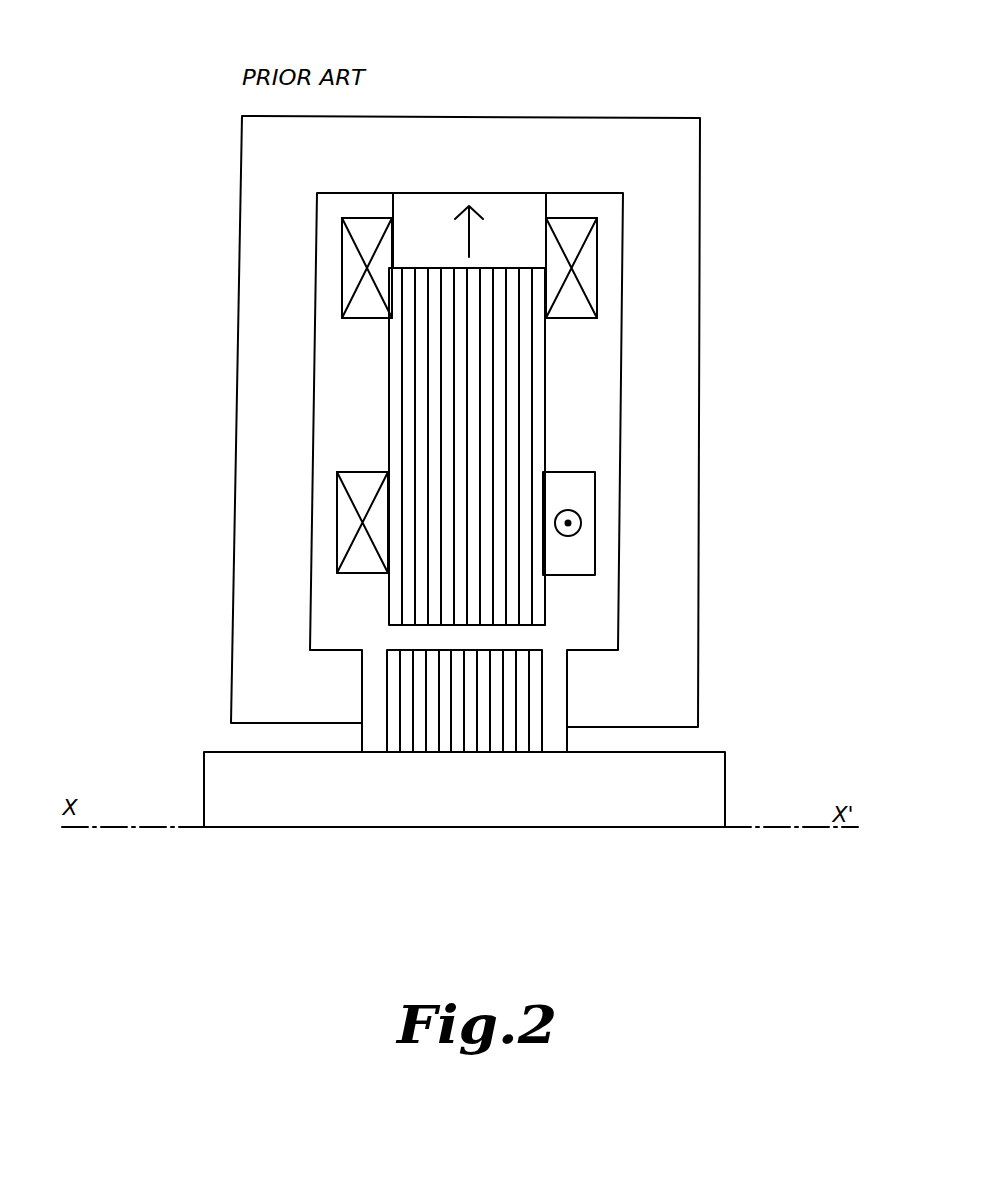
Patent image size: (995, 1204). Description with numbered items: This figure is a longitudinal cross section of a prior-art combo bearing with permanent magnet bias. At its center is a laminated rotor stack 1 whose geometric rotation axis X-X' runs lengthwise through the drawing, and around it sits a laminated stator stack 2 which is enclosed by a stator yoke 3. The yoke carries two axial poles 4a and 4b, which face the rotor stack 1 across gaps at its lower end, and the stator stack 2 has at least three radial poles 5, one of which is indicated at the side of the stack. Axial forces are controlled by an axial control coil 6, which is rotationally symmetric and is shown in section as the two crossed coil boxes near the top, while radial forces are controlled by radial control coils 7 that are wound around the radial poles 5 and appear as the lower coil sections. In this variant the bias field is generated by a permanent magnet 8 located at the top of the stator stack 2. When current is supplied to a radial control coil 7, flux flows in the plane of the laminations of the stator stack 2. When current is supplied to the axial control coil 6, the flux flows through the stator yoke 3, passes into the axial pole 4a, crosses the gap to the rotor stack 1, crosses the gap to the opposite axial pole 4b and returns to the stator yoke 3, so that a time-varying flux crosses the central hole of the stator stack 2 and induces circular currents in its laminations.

The laminated rotor stack 1 is at (485, 730).
The laminated stator stack 2 is at (497, 410).
The stator yoke 3 is at (642, 683).
The axial pole 4a is at (357, 728).
The axial pole 4b is at (572, 738).
The radial pole 5 is at (543, 603).
The axial control coil 6 is at (348, 255).
The radial control coil 7 is at (367, 502).
The permanent magnet 8 is at (428, 235).